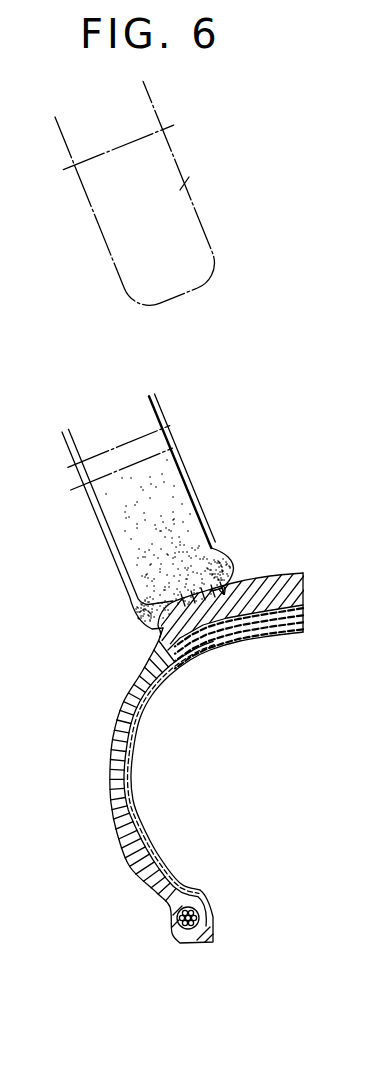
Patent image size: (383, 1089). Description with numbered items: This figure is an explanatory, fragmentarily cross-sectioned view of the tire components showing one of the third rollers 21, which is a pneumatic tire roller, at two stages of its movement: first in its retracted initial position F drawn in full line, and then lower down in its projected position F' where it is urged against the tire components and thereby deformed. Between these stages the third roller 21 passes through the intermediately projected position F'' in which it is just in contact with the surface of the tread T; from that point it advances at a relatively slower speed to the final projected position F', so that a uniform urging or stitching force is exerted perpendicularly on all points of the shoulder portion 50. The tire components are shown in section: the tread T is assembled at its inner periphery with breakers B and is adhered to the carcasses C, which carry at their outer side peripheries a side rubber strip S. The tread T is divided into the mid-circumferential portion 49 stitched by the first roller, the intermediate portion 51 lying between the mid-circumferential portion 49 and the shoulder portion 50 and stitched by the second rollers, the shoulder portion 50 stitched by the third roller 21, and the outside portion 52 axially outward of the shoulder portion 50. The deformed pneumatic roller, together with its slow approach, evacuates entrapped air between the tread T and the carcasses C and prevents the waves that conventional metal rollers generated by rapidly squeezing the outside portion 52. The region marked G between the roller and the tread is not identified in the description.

The third roller 21 is at (189, 178).
The mid-circumferential portion 49 is at (305, 592).
The shoulder portion 50 is at (186, 594).
The intermediate portion 51 is at (247, 591).
The outside portion 52 is at (161, 633).
The retracted initial position F is at (152, 193).
The final projected position F' is at (129, 512).
The intermediately projected position F'' is at (155, 499).
The granule bulge G is at (206, 566).
The tread T is at (284, 579).
The breakers B is at (230, 646).
The carcasses C is at (146, 697).
The side rubber strip S is at (113, 790).